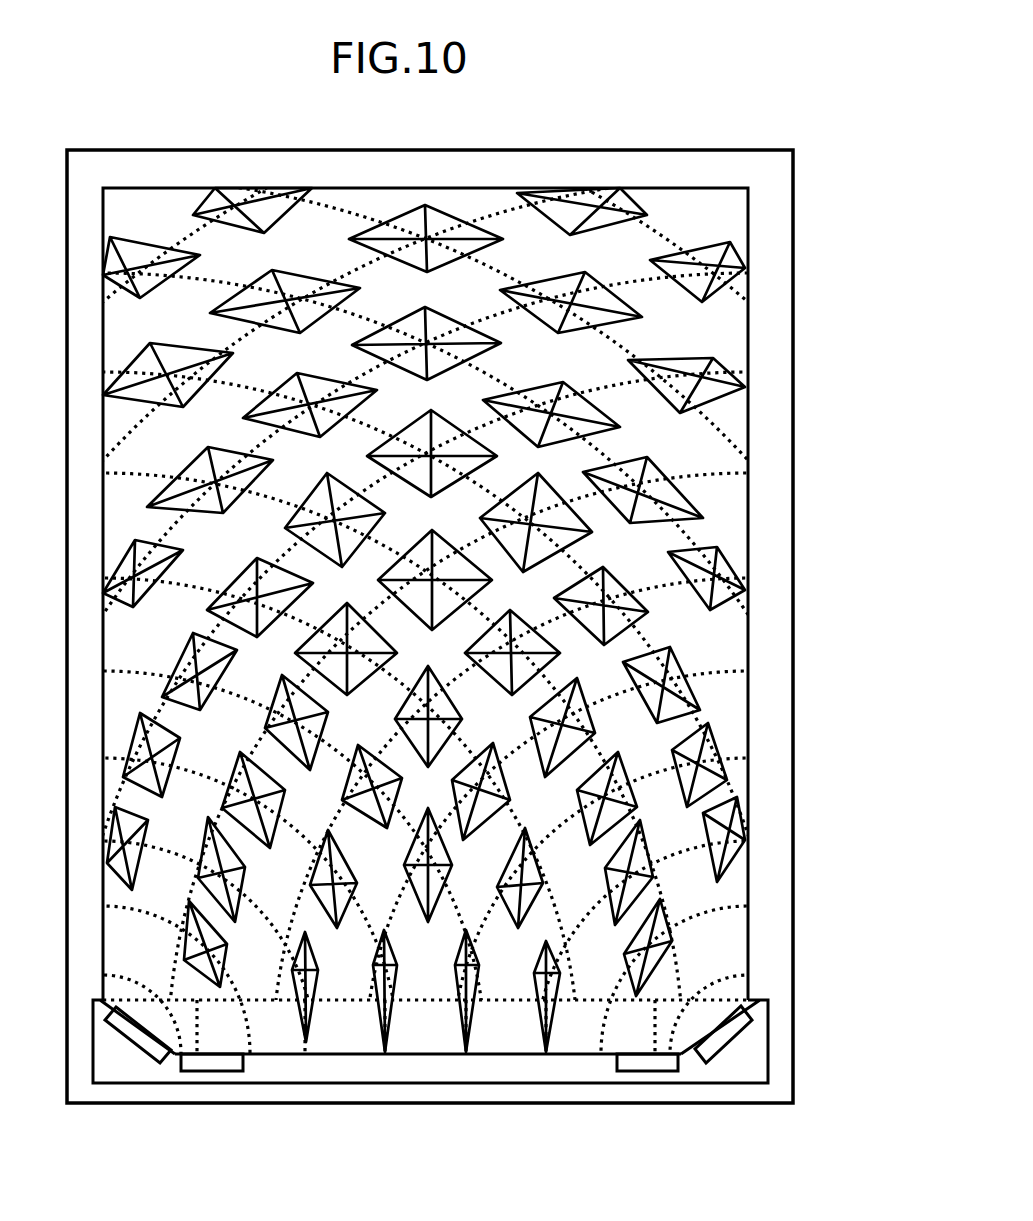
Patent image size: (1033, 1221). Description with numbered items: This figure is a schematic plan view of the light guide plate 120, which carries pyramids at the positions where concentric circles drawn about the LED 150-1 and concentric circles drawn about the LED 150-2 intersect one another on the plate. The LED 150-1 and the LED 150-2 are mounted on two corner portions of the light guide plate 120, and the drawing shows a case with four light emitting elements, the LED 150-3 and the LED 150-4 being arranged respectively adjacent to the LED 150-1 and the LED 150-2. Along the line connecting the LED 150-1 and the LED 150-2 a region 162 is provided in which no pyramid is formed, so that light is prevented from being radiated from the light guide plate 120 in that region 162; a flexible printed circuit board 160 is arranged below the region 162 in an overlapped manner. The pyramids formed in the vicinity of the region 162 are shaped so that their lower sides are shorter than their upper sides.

The light guide plate 120 is at (735, 321).
The LED 150-1 is at (720, 1043).
The LED 150-2 is at (140, 1038).
The LED 150-3 is at (649, 1060).
The LED 150-4 is at (217, 1063).
The flexible printed circuit board 160 is at (307, 1068).
The region 162 is at (450, 1046).